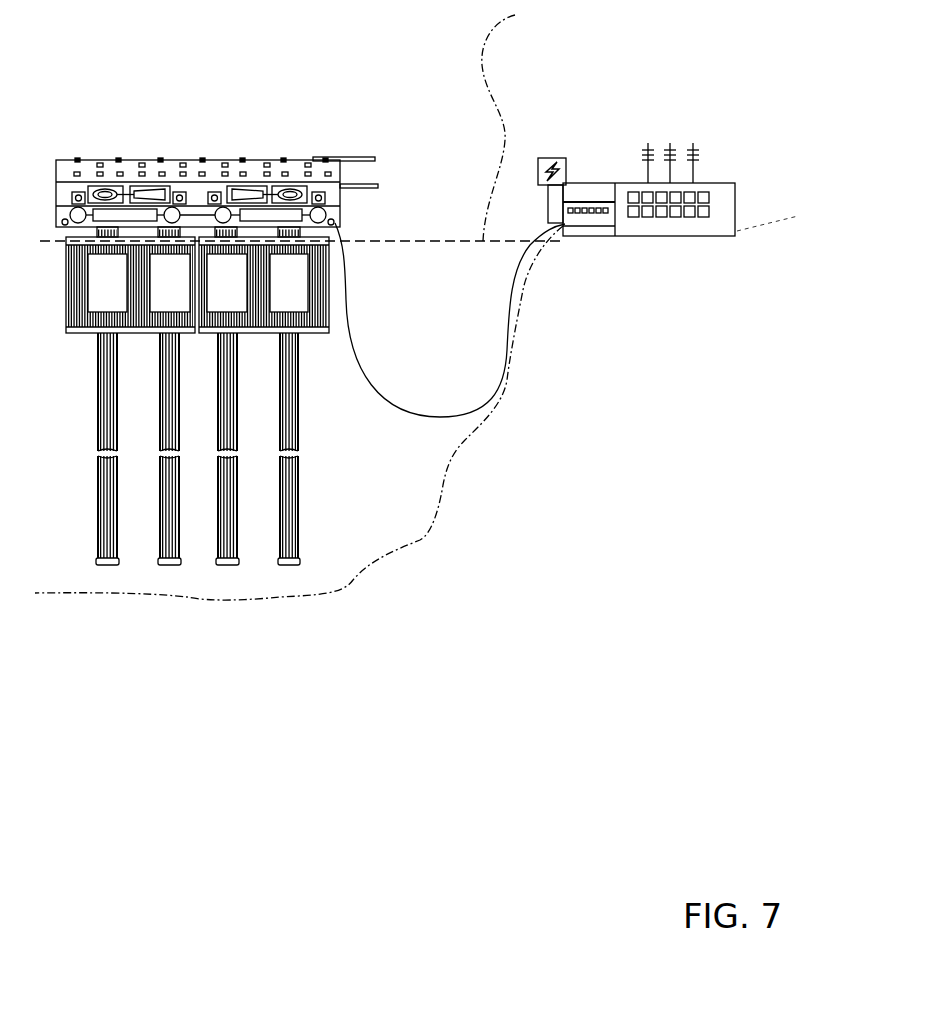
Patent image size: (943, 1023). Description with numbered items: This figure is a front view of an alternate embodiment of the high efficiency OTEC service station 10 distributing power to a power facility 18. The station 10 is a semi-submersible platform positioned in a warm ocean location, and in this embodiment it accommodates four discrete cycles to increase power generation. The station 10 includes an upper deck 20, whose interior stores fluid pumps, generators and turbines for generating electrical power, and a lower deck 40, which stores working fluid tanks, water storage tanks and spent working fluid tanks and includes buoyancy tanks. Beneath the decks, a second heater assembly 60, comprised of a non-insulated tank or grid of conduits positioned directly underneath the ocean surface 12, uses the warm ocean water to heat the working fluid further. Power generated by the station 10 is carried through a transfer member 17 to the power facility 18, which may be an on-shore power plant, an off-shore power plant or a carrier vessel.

The OTEC service station 10 is at (119, 150).
The ocean surface 12 is at (299, 301).
The transfer member 17 is at (347, 310).
The power facility 18 is at (592, 183).
The upper deck 20 is at (360, 172).
The lower deck 40 is at (360, 213).
The second heater assembly 60 is at (318, 338).